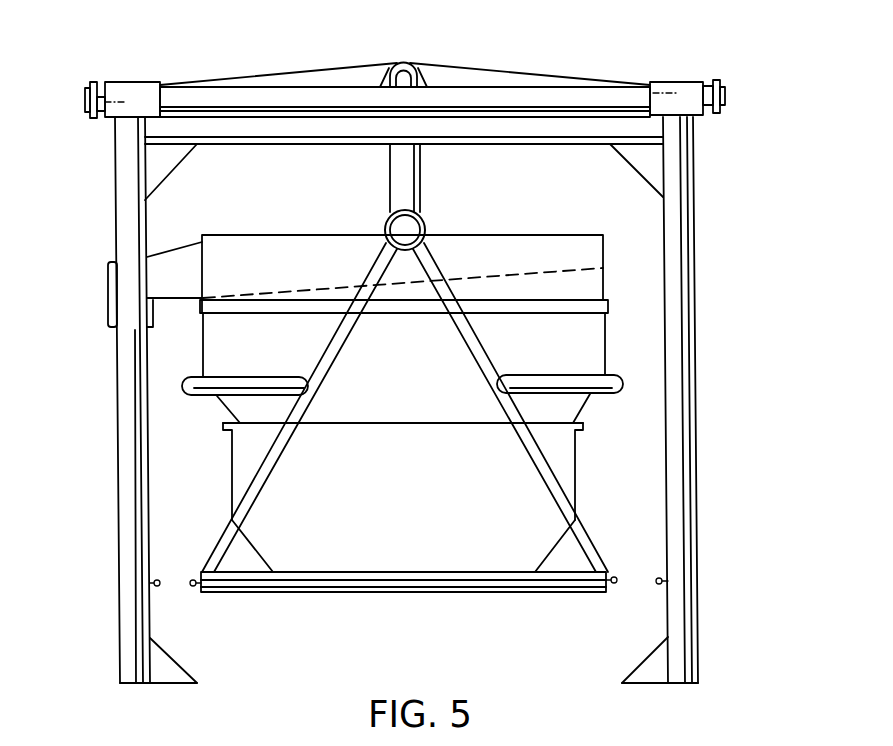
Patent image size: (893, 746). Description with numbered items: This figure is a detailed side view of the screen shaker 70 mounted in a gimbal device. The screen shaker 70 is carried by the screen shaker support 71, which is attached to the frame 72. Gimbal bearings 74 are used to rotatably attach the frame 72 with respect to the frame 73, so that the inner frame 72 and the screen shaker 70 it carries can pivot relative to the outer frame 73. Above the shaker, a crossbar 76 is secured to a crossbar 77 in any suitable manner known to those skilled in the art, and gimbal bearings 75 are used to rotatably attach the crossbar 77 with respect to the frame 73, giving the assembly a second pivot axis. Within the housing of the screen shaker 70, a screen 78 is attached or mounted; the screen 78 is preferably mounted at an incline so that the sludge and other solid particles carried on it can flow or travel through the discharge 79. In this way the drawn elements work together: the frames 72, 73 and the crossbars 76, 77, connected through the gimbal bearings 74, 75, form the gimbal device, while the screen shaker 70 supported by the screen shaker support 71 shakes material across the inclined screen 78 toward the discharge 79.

The screen shaker 70 is at (229, 216).
The screen shaker support 71 is at (408, 577).
The frame 72 is at (282, 456).
The frame 73 is at (558, 136).
The gimbal bearings 74 is at (427, 220).
The gimbal bearings 75 is at (125, 88).
The crossbar 76 is at (413, 62).
The crossbar 77 is at (598, 92).
The screen 78 is at (517, 275).
The discharge 79 is at (175, 257).